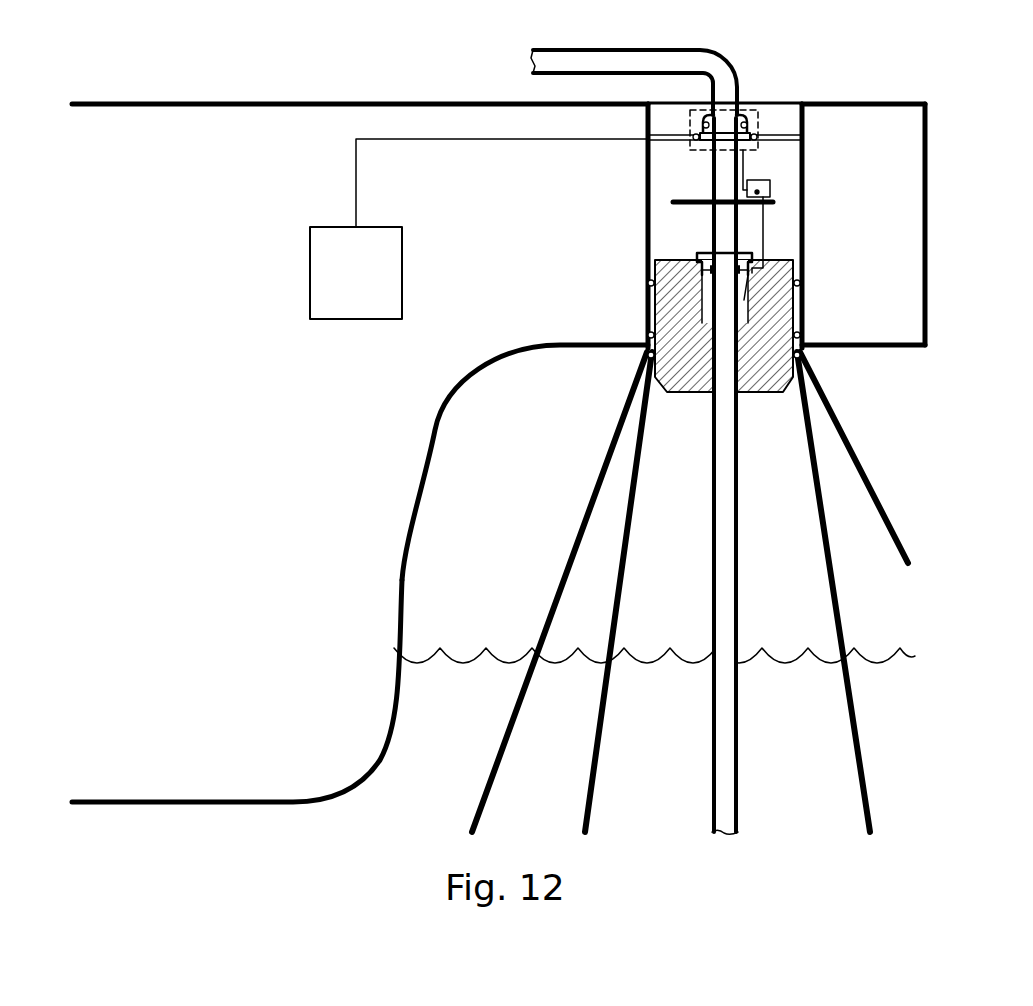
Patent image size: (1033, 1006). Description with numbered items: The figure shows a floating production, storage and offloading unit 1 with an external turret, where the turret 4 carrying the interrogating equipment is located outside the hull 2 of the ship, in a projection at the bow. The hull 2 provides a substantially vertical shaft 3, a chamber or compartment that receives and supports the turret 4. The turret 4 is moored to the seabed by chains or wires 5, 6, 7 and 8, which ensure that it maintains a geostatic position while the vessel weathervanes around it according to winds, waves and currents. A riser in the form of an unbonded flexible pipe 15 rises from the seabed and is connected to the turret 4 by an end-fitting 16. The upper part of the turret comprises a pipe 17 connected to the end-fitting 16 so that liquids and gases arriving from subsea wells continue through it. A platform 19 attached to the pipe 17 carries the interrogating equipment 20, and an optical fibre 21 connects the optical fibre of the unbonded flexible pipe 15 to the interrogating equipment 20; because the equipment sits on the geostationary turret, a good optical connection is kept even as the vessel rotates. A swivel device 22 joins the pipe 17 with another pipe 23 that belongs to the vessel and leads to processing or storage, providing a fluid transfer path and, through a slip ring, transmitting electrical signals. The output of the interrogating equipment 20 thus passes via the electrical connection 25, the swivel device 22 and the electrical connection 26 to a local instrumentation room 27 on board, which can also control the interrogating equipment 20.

The floating production, storage and offloading unit 1 is at (393, 750).
The hull 2 is at (413, 533).
The shaft 3 is at (647, 185).
The turret 4 is at (677, 407).
The chain or wire 5 is at (597, 477).
The chain or wire 6 is at (627, 565).
The chain or wire 7 is at (818, 557).
The chain or wire 8 is at (852, 440).
The unbonded flexible pipe 15 is at (738, 487).
The end-fitting 16 is at (700, 283).
The pipe 17 is at (712, 236).
The platform 19 is at (685, 198).
The interrogating equipment 20 is at (758, 193).
The optical fibre 21 is at (763, 245).
The swivel device 22 is at (750, 110).
The pipe 23 is at (732, 65).
The electrical connection 25 is at (743, 165).
The electrical connection 26 is at (472, 139).
The local instrumentation room 27 is at (402, 272).